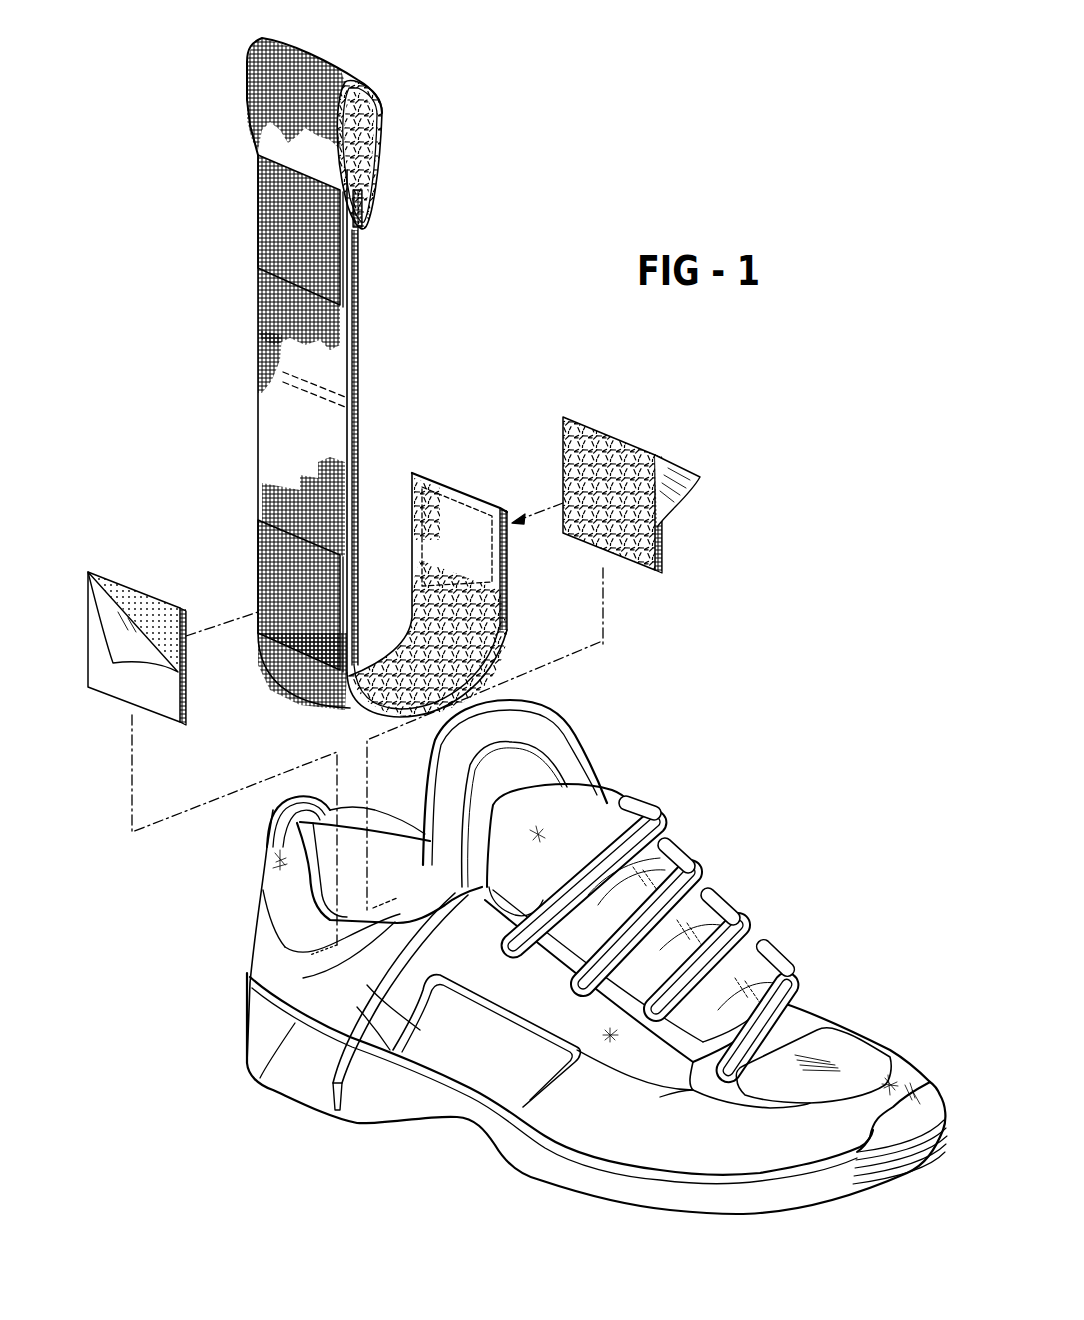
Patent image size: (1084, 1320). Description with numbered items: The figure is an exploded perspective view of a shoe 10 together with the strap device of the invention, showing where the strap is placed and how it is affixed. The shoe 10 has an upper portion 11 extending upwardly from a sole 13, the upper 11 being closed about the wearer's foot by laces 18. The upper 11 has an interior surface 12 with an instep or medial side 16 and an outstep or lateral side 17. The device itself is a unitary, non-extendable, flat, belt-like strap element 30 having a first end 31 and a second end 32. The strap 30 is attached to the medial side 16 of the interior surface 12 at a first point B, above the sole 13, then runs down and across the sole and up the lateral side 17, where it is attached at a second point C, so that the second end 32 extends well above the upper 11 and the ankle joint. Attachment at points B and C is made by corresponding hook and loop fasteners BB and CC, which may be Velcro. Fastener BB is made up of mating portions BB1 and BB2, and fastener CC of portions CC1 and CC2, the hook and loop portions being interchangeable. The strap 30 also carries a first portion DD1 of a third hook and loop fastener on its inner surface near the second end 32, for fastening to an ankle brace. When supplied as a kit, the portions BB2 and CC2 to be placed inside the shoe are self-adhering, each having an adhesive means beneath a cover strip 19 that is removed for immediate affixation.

The shoe 10 is at (579, 957).
The upper portion 11 is at (268, 903).
The interior surface 12 is at (378, 842).
The sole 13 is at (263, 1077).
The medial side 16 is at (397, 870).
The lateral side 17 is at (263, 983).
The laces 18 is at (367, 985).
The cover strip 19 is at (658, 483).
The strap element 30 is at (399, 373).
The first end 31 is at (450, 554).
The second end 32 is at (322, 57).
The first portion of third hook and loop fastener DD1 is at (358, 292).
The first portion of hook and loop fastener CC CC1 is at (310, 552).
The second portion of hook and loop fastener CC CC2 is at (134, 667).
The hook and loop fastener CC is at (209, 721).
The first portion of hook and loop fastener BB BB1 is at (483, 502).
The second portion of hook and loop fastener BB BB2 is at (658, 533).
The hook and loop fastener BB is at (543, 652).
The first point B is at (398, 901).
The second point C is at (342, 947).